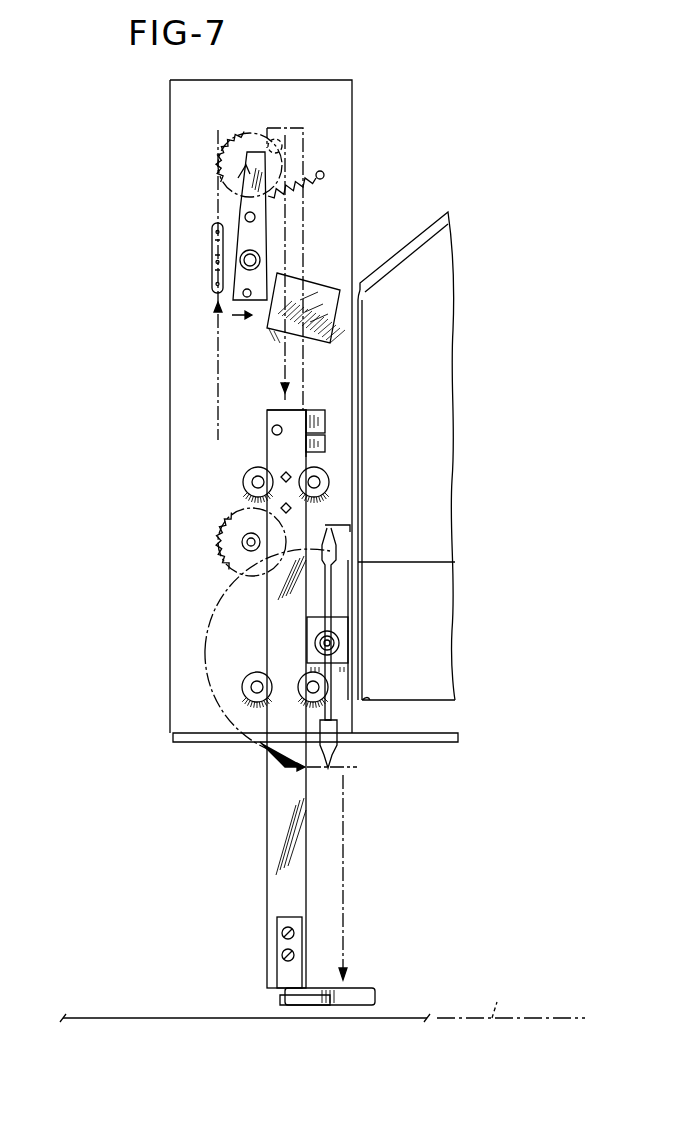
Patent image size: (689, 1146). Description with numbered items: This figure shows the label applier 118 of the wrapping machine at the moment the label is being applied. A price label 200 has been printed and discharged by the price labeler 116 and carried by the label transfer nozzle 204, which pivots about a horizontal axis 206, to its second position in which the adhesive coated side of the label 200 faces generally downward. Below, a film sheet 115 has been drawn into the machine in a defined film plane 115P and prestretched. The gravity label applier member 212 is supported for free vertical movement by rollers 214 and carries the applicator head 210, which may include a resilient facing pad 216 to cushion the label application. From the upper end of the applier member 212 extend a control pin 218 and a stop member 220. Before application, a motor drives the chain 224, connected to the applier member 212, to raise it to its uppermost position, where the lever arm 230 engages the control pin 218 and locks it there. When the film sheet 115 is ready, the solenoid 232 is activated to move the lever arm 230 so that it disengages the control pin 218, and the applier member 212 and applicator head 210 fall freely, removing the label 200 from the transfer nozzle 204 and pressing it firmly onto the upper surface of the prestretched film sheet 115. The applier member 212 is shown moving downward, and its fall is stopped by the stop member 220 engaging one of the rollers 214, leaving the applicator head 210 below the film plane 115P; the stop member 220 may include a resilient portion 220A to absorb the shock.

The film sheet 115 is at (395, 1018).
The film plane 115P is at (497, 1002).
The price labeler 116 is at (416, 485).
The label applier 118 is at (265, 80).
The price label 200 is at (362, 770).
The label transfer nozzle 204 is at (342, 693).
The horizontal axis 206 is at (318, 638).
The applicator head 210 is at (365, 988).
The gravity label applier member 212 is at (267, 833).
The rollers 214 is at (299, 477).
The resilient facing pad 216 is at (280, 1000).
The control pin 218 is at (272, 427).
The stop member 220 is at (325, 410).
The resilient portion 220A is at (325, 452).
The chain 224 is at (212, 243).
The lever arm 230 is at (245, 200).
The solenoid 232 is at (335, 260).